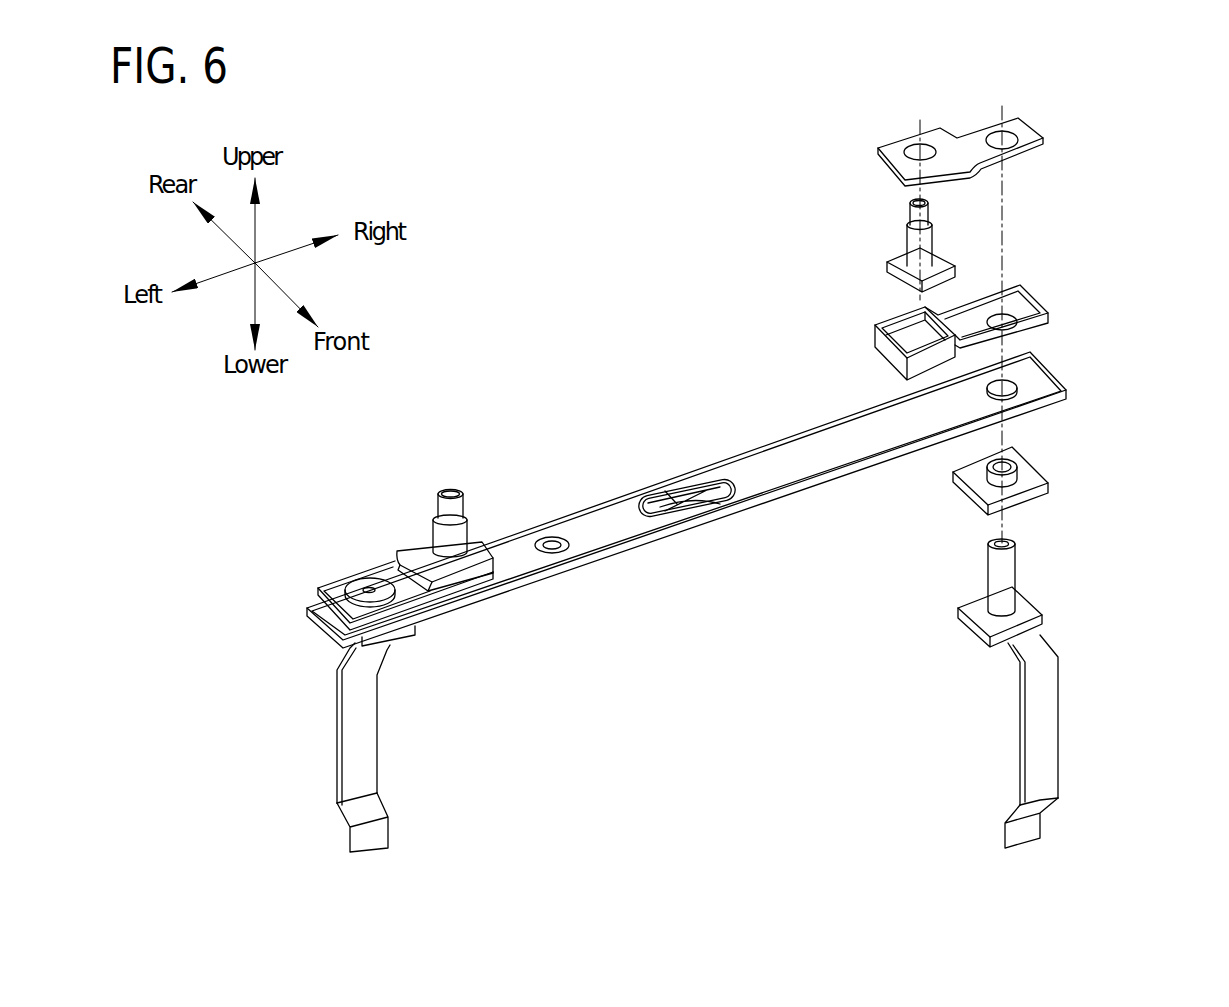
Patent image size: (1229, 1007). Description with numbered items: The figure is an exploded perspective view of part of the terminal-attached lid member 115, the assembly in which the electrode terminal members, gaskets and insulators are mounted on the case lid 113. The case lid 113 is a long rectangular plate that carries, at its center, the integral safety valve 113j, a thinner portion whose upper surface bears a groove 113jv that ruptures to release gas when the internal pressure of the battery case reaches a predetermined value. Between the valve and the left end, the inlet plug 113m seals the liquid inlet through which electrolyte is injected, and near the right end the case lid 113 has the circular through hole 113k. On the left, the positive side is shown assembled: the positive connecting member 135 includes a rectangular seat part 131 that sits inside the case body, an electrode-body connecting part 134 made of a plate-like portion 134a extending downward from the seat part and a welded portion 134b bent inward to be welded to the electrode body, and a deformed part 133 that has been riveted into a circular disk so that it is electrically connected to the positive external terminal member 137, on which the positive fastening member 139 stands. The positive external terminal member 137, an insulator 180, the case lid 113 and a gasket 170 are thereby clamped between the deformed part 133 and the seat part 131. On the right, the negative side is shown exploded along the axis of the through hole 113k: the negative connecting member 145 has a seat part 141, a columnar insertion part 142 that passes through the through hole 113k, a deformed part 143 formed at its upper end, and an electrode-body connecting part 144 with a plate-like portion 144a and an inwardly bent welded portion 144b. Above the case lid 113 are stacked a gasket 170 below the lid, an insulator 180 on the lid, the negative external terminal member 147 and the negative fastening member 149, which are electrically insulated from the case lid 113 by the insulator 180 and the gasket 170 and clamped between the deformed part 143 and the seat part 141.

The case lid 113 is at (656, 548).
The safety valve 113j is at (688, 486).
The groove 113jv is at (700, 514).
The through hole 113k is at (1020, 382).
The inlet plug 113m is at (549, 538).
The terminal-attached lid member 115 is at (763, 402).
The seat part 131 is at (404, 650).
The deformed part 133 is at (360, 586).
The electrode-body connecting part 134 is at (252, 760).
The plate-like portion 134a is at (354, 778).
The welded portion 134b is at (367, 842).
The positive connecting member 135 is at (376, 760).
The positive external terminal member 137 is at (416, 550).
The positive fastening member 139 is at (453, 489).
The seat part 141 is at (972, 624).
The insertion part 142 is at (985, 615).
The deformed part 143 is at (989, 569).
The electrode-body connecting part 144 is at (933, 730).
The plate-like portion 144a is at (1030, 752).
The welded portion 144b is at (1020, 835).
The negative connecting member 145 is at (1052, 748).
The negative external terminal member 147 is at (1038, 135).
The negative fastening member 149 is at (907, 243).
The gasket 170 is at (410, 634).
The insulator 180 is at (478, 578).